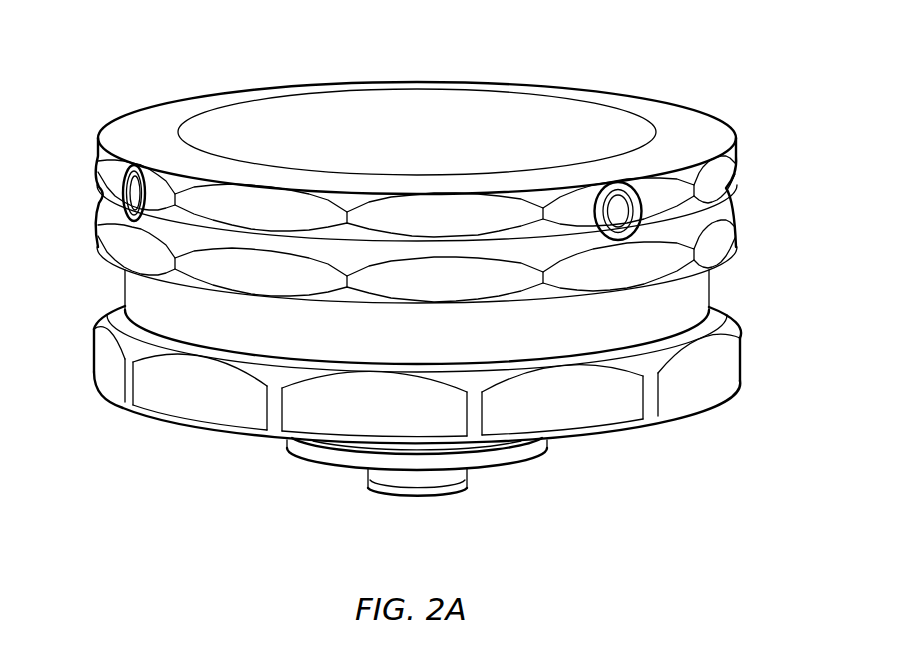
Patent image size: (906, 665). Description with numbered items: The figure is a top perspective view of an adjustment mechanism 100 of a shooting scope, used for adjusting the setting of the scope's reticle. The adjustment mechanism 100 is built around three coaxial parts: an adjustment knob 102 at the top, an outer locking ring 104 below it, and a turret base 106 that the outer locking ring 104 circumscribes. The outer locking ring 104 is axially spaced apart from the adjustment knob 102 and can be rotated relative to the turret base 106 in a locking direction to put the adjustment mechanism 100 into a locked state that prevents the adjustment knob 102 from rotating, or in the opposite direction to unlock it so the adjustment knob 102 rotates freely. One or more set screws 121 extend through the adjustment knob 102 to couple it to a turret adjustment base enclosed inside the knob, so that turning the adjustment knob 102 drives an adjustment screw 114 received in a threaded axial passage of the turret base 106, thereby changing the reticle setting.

The adjustment mechanism 100 is at (90, 62).
The adjustment knob 102 is at (737, 153).
The outer locking ring 104 is at (738, 355).
The turret base 106 is at (515, 465).
The adjustment screw 114 is at (452, 493).
The set screws 121 is at (115, 193).